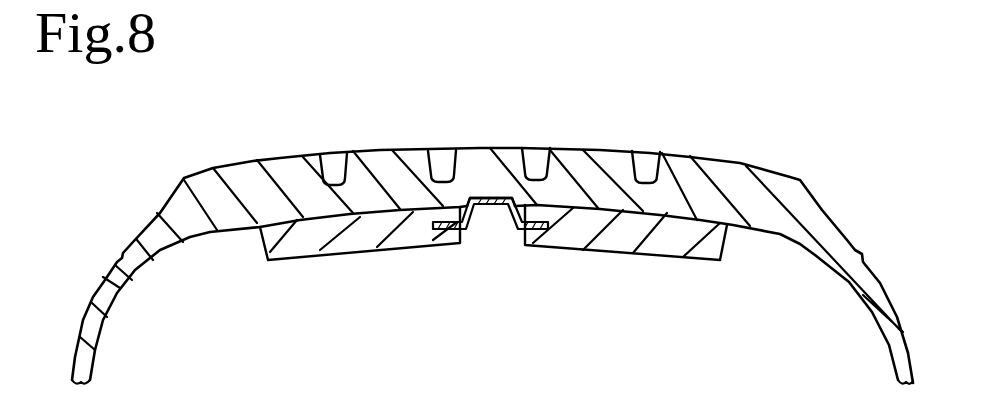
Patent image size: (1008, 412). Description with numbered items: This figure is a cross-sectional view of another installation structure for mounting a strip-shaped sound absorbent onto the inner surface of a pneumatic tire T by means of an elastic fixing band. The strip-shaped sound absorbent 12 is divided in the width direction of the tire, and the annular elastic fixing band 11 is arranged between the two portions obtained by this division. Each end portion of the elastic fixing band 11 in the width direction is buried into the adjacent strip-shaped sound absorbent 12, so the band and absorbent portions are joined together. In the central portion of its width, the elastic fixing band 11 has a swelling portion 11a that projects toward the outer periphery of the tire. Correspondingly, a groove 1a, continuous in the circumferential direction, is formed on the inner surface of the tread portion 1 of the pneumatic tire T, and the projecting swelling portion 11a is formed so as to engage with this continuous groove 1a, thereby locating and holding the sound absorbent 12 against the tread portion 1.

The pneumatic tire T is at (737, 161).
The tread portion 1 is at (614, 161).
The groove 1a is at (486, 196).
The elastic fixing band 11 is at (444, 248).
The swelling portion 11a is at (489, 207).
The strip-shaped sound absorbent 12 is at (318, 248).